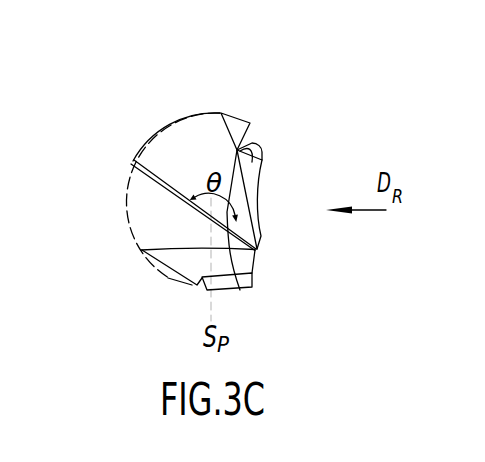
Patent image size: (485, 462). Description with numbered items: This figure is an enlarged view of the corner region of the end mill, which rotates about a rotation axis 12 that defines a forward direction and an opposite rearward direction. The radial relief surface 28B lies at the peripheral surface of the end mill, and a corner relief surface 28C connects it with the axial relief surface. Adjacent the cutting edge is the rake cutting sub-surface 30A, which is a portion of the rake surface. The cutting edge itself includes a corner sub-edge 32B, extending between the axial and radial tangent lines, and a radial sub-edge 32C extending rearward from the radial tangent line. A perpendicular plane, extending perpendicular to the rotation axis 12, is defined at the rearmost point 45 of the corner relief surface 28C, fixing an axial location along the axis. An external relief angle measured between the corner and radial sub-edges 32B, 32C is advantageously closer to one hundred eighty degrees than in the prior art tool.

The rotation axis 12 is at (209, 302).
The radial relief surface 28B is at (204, 156).
The corner relief surface 28C is at (247, 202).
The rake cutting sub-surface 30A is at (248, 263).
The corner sub-edge 32B is at (256, 240).
The radial sub-edge 32C is at (159, 172).
The rearmost point 45 is at (240, 290).